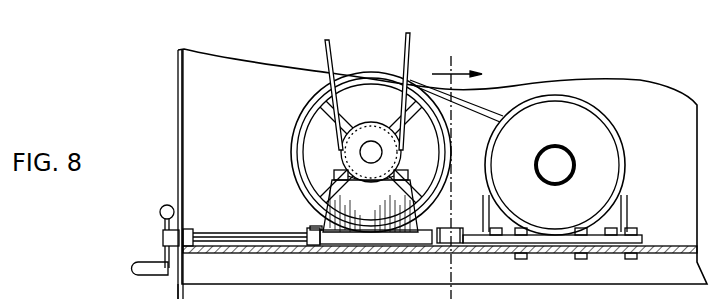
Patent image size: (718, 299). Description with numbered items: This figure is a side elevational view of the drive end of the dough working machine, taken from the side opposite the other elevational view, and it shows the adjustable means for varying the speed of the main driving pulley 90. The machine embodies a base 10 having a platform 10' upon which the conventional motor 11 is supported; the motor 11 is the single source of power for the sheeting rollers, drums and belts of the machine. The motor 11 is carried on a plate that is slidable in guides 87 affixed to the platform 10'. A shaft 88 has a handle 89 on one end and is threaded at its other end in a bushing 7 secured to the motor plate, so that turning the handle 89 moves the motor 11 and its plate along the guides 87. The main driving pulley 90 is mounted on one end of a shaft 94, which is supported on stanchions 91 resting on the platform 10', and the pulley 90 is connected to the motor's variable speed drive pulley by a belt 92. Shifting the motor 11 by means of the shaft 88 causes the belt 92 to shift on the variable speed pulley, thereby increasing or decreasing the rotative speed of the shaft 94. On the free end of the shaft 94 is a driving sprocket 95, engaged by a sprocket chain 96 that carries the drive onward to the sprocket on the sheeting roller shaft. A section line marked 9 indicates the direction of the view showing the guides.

The bushing 7 is at (461, 228).
The section line / viewing direction arrow 9 is at (455, 175).
The base 10 is at (416, 174).
The platform 10' is at (440, 264).
The motor 11 is at (618, 140).
The guides 87 is at (641, 233).
The shaft 88 is at (246, 232).
The handle 89 is at (146, 259).
The main driving pulley 90 is at (291, 138).
The stanchions 91 is at (315, 228).
The belt 92 is at (478, 114).
The shaft 94 is at (368, 162).
The driving sprocket 95 is at (356, 157).
The sprocket chain 96 is at (331, 50).